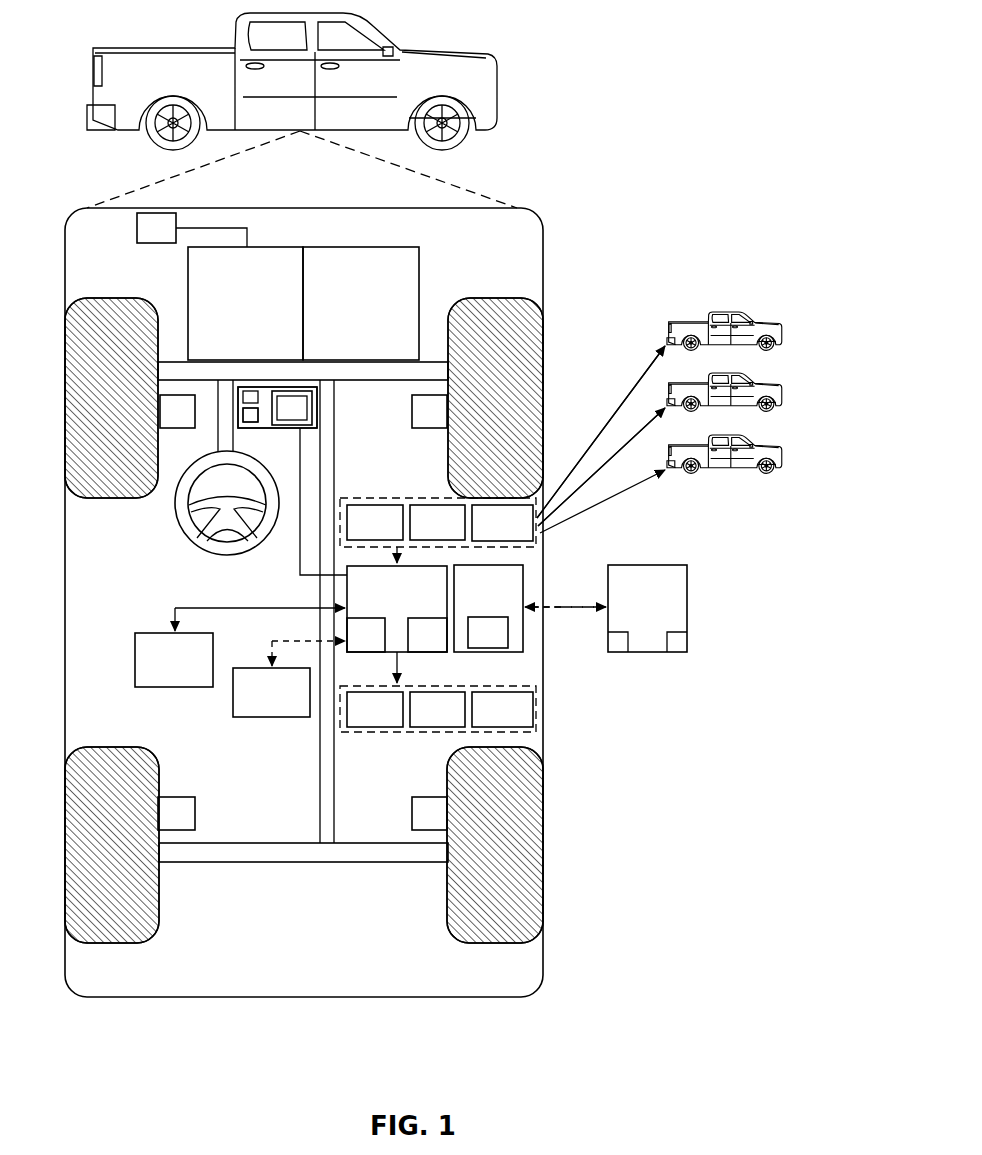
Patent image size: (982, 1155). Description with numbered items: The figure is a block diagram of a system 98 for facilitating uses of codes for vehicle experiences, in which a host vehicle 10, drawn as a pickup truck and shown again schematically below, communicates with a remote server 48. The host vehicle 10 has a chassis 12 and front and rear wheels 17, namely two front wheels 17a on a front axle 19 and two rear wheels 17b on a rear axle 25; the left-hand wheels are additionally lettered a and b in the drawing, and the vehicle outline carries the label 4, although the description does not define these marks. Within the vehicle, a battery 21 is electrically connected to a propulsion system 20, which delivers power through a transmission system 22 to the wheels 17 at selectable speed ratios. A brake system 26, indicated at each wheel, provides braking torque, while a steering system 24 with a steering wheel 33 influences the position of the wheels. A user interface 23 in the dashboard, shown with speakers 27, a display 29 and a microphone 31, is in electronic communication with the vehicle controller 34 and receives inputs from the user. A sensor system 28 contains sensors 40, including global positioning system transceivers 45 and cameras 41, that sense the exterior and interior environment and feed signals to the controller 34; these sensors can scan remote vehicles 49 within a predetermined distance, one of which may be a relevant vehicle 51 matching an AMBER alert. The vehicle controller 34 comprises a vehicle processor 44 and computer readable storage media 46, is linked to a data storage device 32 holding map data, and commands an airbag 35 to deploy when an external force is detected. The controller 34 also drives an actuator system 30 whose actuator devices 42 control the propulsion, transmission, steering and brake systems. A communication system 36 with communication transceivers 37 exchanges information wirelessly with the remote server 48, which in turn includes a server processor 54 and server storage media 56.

The host vehicle 10 is at (448, 44).
The vehicle body 4 is at (63, 570).
The system 98 is at (787, 251).
The battery 21 is at (153, 209).
The propulsion system 20 is at (233, 314).
The transmission system 22 is at (348, 314).
The front axle 19 is at (390, 381).
The rear axle 25 is at (362, 843).
The wheels 17 is at (112, 298).
The front wheels 17a is at (523, 390).
The rear wheels 17b is at (523, 845).
The front left wheel a is at (83, 388).
The rear left wheel b is at (83, 840).
The brake system 26 is at (189, 425).
The chassis 12 is at (321, 748).
The steering wheel 33 is at (175, 517).
The user interface 23 is at (288, 388).
The speakers 27 is at (252, 388).
The displays 29 is at (240, 417).
The microphones 31 is at (281, 421).
The steering system 24 is at (241, 434).
The sensor system 28 is at (405, 498).
The sensors 40 is at (363, 536).
The global positioning system transceivers 45 is at (425, 536).
The cameras 41 is at (490, 536).
The vehicle controller 34 is at (385, 604).
The vehicle processor 44 is at (354, 649).
The vehicle computer readable storage device or media 46 is at (416, 649).
The communication system 36 is at (476, 606).
The communication transceivers 37 is at (476, 646).
The remote server 48 is at (636, 619).
The server processor 54 is at (618, 660).
The server computer readable storage device or media 56 is at (678, 660).
The airbag 35 is at (163, 673).
The data storage device 32 is at (260, 705).
The actuator system 30 is at (410, 735).
The actuator devices 42 is at (363, 723).
The remote vehicles 49 is at (782, 327).
The relevant vehicle 51 is at (782, 465).